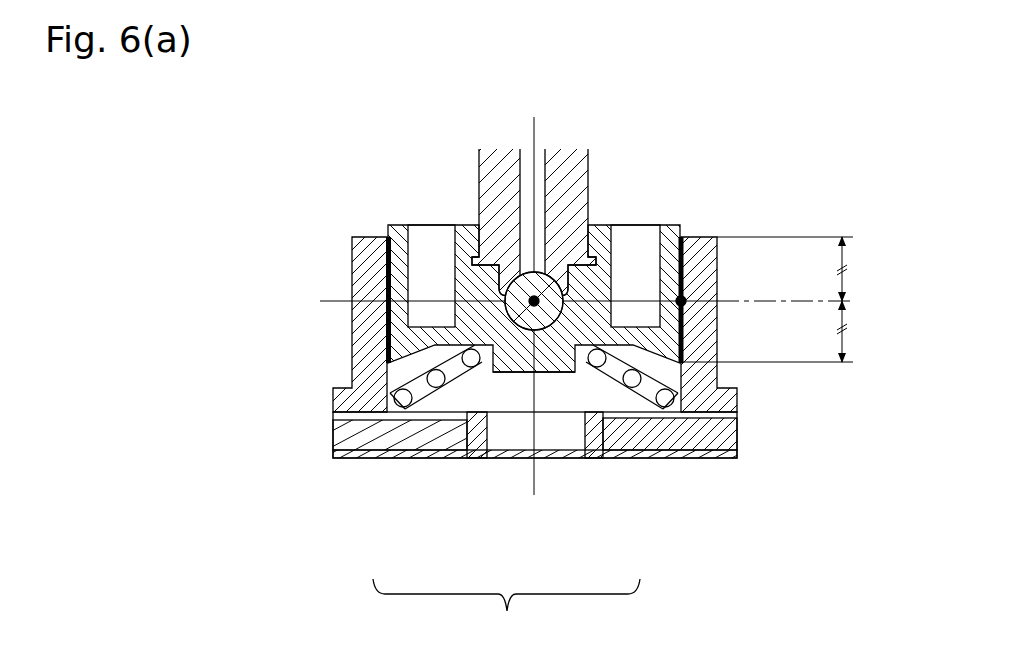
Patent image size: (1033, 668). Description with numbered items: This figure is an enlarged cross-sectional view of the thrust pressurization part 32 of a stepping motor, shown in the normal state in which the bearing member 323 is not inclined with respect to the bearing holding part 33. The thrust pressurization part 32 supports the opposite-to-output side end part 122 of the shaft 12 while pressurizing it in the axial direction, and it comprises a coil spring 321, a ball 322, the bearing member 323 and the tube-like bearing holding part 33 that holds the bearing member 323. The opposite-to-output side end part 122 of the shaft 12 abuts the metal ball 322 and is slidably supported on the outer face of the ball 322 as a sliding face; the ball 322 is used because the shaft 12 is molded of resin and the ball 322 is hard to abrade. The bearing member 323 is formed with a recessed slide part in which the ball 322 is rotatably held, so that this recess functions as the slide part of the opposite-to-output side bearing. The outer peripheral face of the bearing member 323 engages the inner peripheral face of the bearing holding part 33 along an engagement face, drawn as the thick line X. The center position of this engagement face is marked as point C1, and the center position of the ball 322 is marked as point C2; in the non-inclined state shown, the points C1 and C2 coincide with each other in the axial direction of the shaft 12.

The shaft 12 is at (599, 177).
The opposite-to-output side end part 122 is at (472, 240).
The thrust pressurization part 32 is at (506, 610).
The coil spring 321 is at (437, 392).
The ball 322 is at (537, 331).
The bearing member 323 is at (507, 385).
The bearing holding part 33 is at (655, 390).
The engagement face X is at (684, 244).
The center position of the engagement face C1 is at (685, 292).
The center position of the ball C2 is at (683, 337).